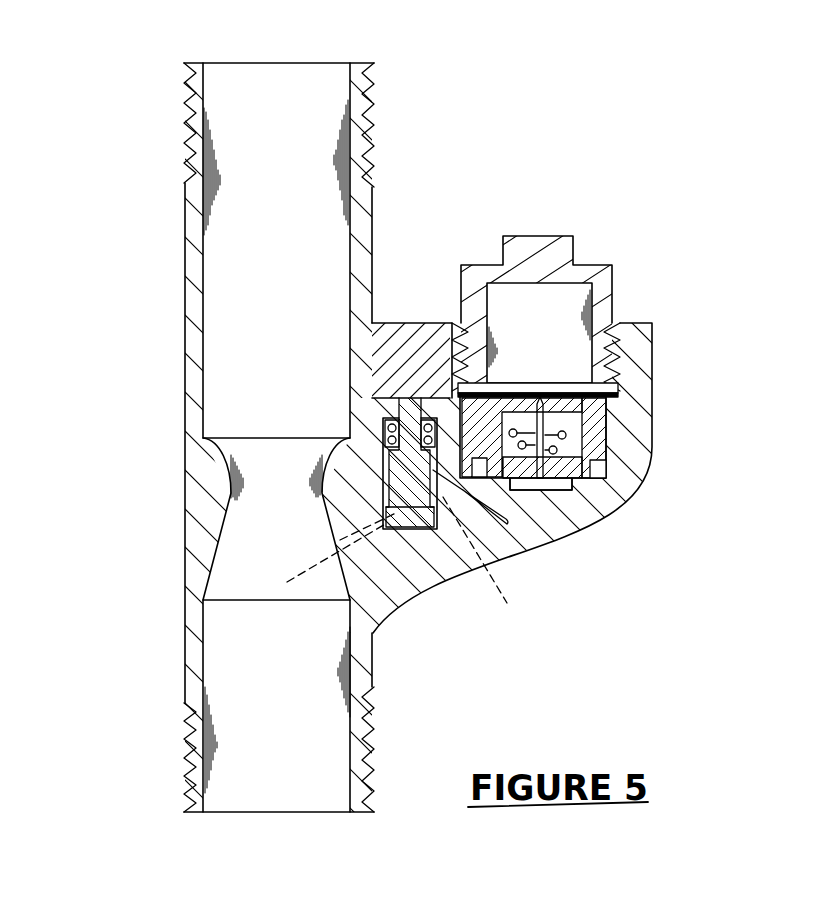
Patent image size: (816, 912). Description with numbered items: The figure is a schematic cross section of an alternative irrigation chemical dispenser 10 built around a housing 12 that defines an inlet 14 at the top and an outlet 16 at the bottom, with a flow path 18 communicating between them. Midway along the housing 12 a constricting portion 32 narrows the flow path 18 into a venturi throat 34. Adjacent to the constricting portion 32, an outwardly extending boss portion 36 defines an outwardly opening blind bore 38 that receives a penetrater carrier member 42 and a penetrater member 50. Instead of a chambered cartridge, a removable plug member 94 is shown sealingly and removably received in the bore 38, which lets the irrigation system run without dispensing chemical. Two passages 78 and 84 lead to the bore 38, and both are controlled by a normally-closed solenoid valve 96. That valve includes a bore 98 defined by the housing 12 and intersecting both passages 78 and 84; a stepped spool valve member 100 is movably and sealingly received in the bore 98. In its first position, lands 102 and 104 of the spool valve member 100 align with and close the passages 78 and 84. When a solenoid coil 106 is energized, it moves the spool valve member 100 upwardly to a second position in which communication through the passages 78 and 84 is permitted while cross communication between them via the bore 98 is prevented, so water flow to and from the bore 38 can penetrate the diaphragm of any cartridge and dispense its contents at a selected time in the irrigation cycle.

The irrigation chemical dispenser 10 is at (119, 125).
The housing 12 is at (185, 330).
The inlet 14 is at (301, 3).
The outlet 16 is at (280, 813).
The flow path 18 is at (305, 253).
The constricting portion 32 is at (231, 478).
The venturi throat 34 is at (290, 485).
The boss portion 36 is at (587, 527).
The blind bore 38 is at (610, 418).
The penetrater carrier member 42 is at (603, 402).
The penetrater member 50 is at (575, 484).
The passage 78 is at (388, 462).
The passage 84 is at (288, 565).
The plug member 94 is at (535, 246).
The solenoid valve 96 is at (449, 279).
The bore 98 is at (384, 510).
The spool valve member 100 is at (398, 419).
The land 102 is at (385, 474).
The land 104 is at (393, 521).
The solenoid coil 106 is at (408, 330).